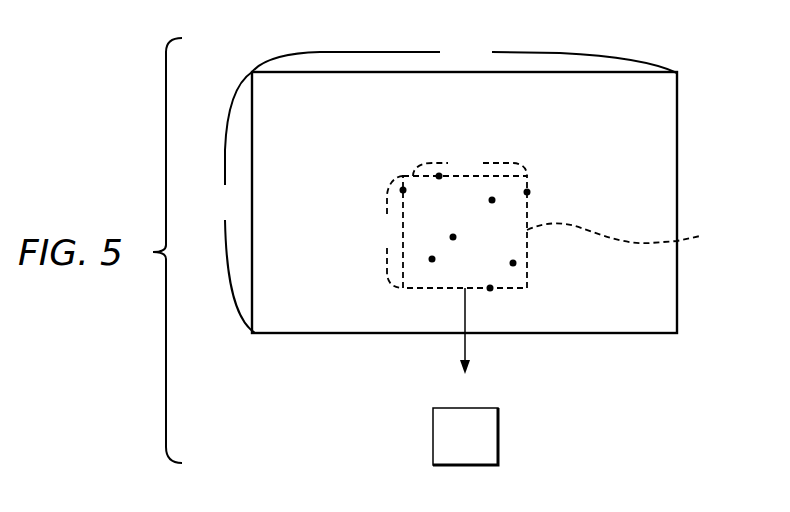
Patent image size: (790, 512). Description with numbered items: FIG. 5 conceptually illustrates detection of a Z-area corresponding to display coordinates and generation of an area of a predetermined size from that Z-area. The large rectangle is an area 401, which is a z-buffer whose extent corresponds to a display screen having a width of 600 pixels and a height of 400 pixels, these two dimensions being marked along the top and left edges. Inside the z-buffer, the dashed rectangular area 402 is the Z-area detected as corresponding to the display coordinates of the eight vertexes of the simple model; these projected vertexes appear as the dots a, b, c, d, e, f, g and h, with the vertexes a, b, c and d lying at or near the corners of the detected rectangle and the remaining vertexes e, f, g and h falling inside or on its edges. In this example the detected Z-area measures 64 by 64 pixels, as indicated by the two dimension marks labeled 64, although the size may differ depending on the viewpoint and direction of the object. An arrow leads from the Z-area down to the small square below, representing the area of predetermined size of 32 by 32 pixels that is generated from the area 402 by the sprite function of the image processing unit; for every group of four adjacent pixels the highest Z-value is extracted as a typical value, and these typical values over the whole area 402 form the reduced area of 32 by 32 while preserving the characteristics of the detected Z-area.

The display screen width in pixels 600 is at (464, 58).
The display screen height in pixels 400 is at (230, 202).
The area (z-buffer) 401 is at (677, 138).
The rectangular area (Z-area) 402 is at (634, 233).
The Z-area size in pixels 64 is at (452, 219).
The predetermined-size area in pixels 32 is at (498, 408).
The vertex a is at (400, 190).
The vertex b is at (432, 259).
The vertex c is at (491, 289).
The vertex d is at (492, 200).
The vertex e is at (439, 176).
The vertex f is at (453, 237).
The vertex g is at (519, 263).
The vertex h is at (533, 192).